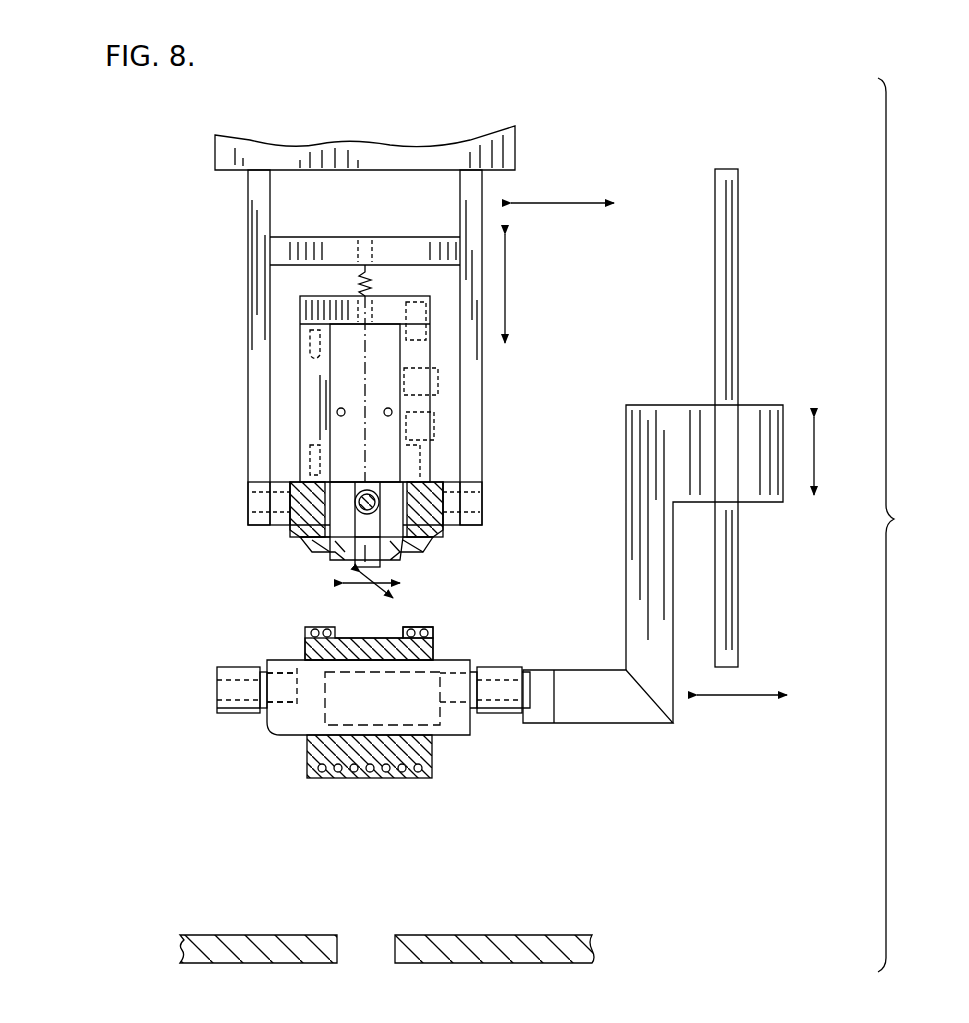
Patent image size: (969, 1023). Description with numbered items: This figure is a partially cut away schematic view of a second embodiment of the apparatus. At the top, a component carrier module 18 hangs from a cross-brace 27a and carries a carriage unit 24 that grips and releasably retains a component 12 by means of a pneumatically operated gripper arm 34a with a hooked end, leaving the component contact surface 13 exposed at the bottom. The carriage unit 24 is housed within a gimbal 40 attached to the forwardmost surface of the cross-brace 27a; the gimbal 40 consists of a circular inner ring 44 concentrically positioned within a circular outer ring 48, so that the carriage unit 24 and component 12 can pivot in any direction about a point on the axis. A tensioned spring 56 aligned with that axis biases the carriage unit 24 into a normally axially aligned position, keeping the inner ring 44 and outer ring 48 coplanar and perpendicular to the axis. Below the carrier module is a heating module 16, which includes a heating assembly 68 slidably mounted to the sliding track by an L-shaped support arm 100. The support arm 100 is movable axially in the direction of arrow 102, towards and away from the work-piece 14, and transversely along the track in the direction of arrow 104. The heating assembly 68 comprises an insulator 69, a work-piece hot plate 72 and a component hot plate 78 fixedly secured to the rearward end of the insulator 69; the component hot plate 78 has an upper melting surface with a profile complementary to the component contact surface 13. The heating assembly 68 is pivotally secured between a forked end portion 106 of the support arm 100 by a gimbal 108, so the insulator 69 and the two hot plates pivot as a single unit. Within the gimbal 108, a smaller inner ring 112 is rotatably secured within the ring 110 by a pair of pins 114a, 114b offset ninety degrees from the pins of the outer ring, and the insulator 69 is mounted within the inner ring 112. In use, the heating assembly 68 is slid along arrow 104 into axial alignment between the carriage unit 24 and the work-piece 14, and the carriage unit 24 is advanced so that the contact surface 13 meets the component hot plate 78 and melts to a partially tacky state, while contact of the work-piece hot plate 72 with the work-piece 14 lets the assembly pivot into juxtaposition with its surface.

The cross-brace 27a is at (215, 155).
The tensioned spring 56 is at (355, 275).
The component carrier module 18 is at (246, 348).
The carriage unit 24 is at (298, 401).
The gimbal 40 is at (298, 488).
The inner ring 44 is at (420, 485).
The outer ring 48 is at (445, 491).
The component 12 is at (430, 549).
The contact surface 13 is at (410, 557).
The gripper arm 34a is at (358, 572).
The component hot plate 78 is at (303, 640).
The inner ring 112 is at (260, 682).
The pin 114a is at (255, 682).
The heating module 16 is at (188, 690).
The gimbal 108 is at (214, 715).
The insulator 69 is at (300, 708).
The heating assembly 68 is at (438, 637).
The ring 110 is at (503, 665).
The pin 114b is at (477, 718).
The forked end portion 106 is at (542, 708).
The L-shaped support arm 100 is at (632, 710).
The arrow 102 is at (814, 458).
The arrow 104 is at (750, 695).
The work-piece hot plate 72 is at (466, 780).
The work-piece 14 is at (564, 944).